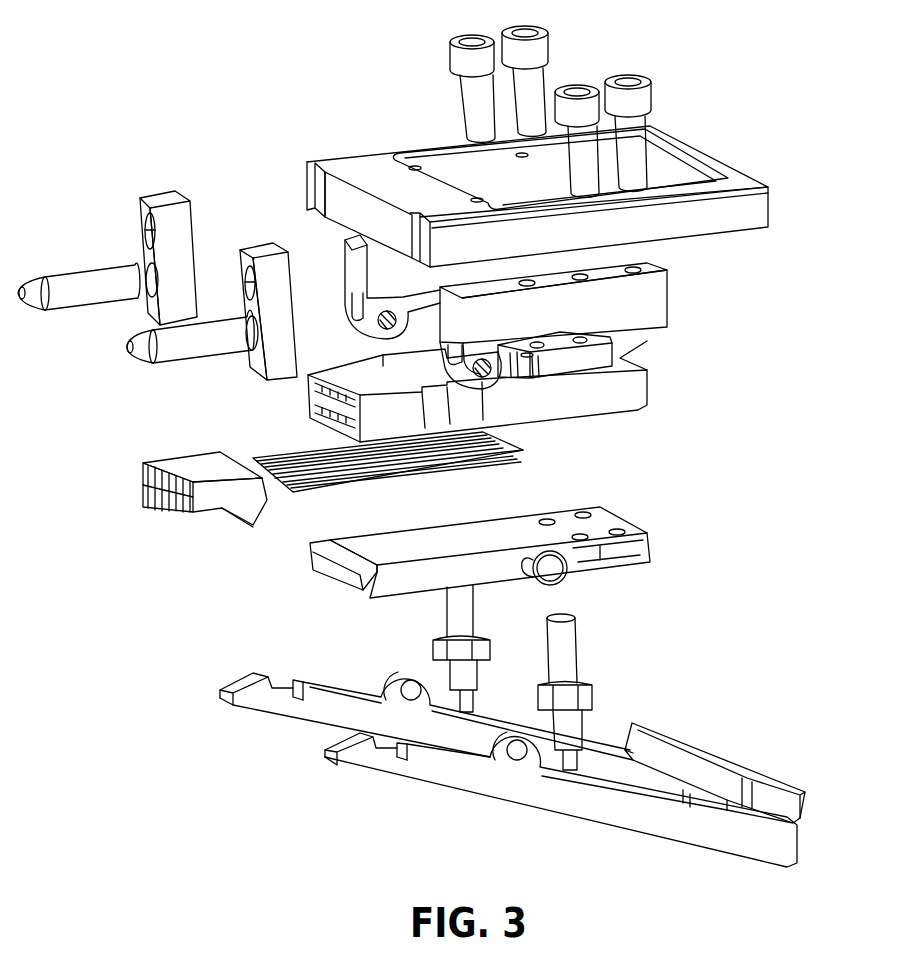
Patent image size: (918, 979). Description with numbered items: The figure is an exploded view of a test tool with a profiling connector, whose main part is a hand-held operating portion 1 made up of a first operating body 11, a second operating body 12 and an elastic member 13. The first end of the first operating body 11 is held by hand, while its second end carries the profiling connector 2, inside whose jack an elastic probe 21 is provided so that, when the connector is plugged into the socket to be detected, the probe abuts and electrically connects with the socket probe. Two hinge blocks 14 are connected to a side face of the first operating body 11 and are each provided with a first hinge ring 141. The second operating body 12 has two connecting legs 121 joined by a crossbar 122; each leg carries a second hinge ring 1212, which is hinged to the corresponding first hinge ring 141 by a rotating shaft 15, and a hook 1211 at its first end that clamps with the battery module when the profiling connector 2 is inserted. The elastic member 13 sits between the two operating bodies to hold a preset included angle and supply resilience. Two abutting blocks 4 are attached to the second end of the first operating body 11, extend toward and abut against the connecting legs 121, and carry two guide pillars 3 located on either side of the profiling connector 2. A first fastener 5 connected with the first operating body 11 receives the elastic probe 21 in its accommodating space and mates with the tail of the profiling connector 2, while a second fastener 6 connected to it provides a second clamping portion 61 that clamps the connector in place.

The operating portion 1 is at (806, 251).
The first operating body 11 is at (650, 220).
The hinge block 14 is at (627, 300).
The first hinge ring 141 is at (353, 277).
The rotating shaft 15 is at (547, 570).
The elastic member 13 is at (562, 635).
The second operating body 12 is at (767, 615).
The connecting leg 121 is at (583, 762).
The hook 1211 is at (270, 675).
The second hinge ring 1212 is at (487, 745).
The crossbar 122 is at (667, 760).
The profiling connector 2 is at (180, 492).
The elastic probe 21 is at (253, 458).
The guide pillar 3 is at (83, 282).
The abutting block 4 is at (157, 200).
The first fastener 5 is at (378, 410).
The second fastener 6 is at (390, 583).
The second clamping portion 61 is at (317, 543).